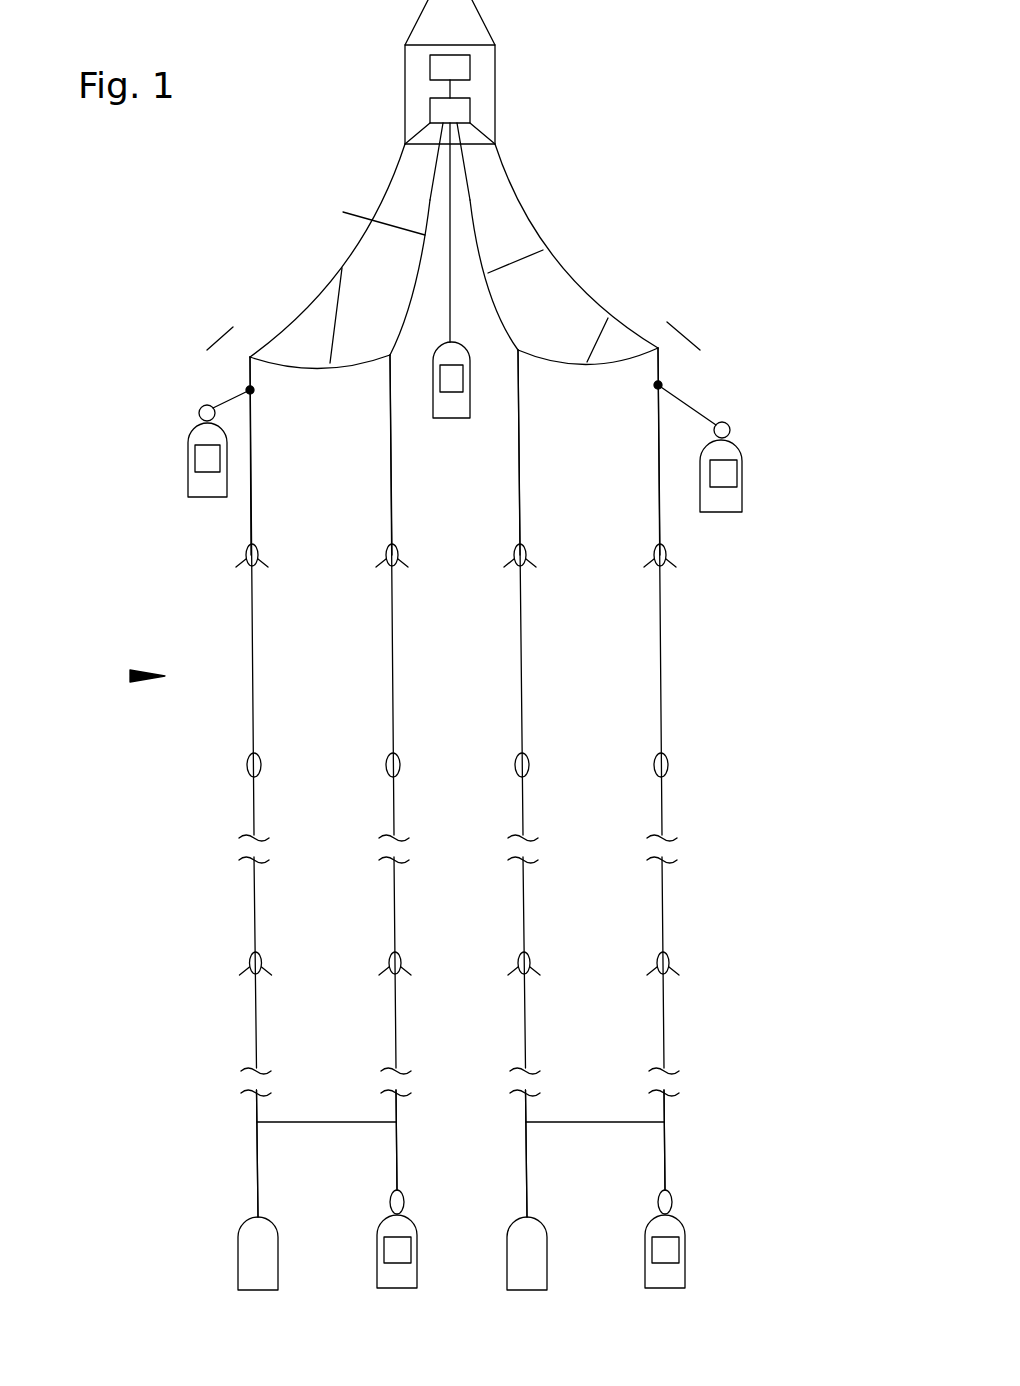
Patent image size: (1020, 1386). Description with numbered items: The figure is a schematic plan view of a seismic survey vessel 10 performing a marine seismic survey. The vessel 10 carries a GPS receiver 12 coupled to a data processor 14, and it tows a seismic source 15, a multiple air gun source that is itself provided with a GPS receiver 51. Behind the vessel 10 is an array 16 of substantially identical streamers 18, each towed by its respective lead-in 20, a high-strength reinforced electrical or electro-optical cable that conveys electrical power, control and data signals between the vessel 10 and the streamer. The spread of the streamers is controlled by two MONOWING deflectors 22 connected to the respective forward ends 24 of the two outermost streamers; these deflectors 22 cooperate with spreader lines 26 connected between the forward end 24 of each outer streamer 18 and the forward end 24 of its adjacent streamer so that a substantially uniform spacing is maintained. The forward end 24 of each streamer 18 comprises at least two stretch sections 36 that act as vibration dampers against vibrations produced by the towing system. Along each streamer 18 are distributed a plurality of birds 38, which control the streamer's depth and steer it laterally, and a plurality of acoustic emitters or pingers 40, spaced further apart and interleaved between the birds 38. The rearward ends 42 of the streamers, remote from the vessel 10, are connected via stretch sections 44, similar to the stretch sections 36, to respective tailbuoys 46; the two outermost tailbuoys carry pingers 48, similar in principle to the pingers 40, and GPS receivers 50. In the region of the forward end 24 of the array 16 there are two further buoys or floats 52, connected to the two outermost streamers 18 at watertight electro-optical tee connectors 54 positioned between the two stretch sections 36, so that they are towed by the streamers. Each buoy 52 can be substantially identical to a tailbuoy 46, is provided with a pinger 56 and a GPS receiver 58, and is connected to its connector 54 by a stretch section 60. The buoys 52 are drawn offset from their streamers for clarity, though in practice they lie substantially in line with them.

The seismic survey vessel 10 is at (496, 112).
The GPS receiver 12 is at (470, 60).
The data processor 14 is at (430, 108).
The seismic source 15 is at (458, 420).
The array 16 is at (130, 675).
The streamer 18 is at (252, 659).
The lead-in 20 is at (349, 214).
The MONOWING deflector 22 is at (207, 352).
The forward end 24 is at (390, 360).
The spreader line 26 is at (343, 270).
The stretch section 36 is at (250, 442).
The bird 38 is at (254, 570).
The acoustic emitter (pinger) 40 is at (386, 757).
The rearward end 42 is at (348, 1122).
The stretch section 44 is at (257, 1157).
The tailbuoy 46 is at (277, 1257).
The pinger 48 is at (405, 1200).
The GPS receiver 50 is at (417, 1250).
The GPS receiver 51 is at (440, 400).
The further buoy (float) 52 is at (210, 497).
The tee connector 54 is at (250, 390).
The pinger 56 is at (198, 408).
The GPS receiver 58 is at (192, 465).
The stretch section 60 is at (230, 400).